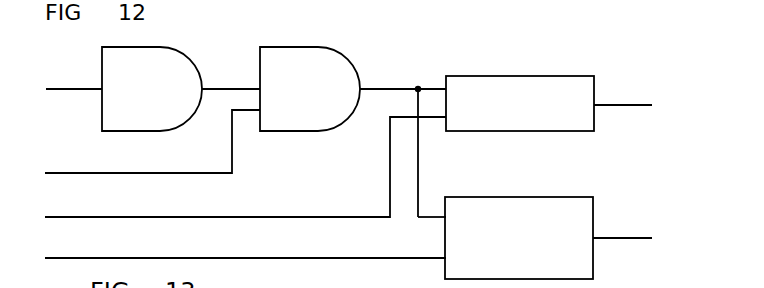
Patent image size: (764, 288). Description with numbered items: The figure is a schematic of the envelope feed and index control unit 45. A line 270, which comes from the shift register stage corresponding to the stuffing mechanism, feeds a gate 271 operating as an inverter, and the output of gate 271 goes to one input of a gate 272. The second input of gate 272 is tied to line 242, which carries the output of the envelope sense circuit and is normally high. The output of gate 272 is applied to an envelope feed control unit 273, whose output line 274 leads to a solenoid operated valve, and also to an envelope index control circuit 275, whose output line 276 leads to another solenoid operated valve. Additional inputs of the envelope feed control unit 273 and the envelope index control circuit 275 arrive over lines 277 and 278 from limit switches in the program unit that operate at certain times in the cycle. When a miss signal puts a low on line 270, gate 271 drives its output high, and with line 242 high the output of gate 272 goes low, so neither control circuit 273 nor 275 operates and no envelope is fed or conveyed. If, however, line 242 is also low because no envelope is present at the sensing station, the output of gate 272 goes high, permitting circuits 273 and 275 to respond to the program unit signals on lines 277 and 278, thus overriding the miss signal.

The envelope feed and index control unit 45 is at (657, 50).
The line 242 is at (80, 173).
The line 270 is at (73, 88).
The gate 271 is at (170, 57).
The gate 272 is at (325, 55).
The envelope feed control unit 273 is at (526, 80).
The line 274 is at (632, 105).
The envelope index control circuit 275 is at (563, 198).
The line 276 is at (622, 238).
The line 277 is at (80, 217).
The line 278 is at (80, 258).